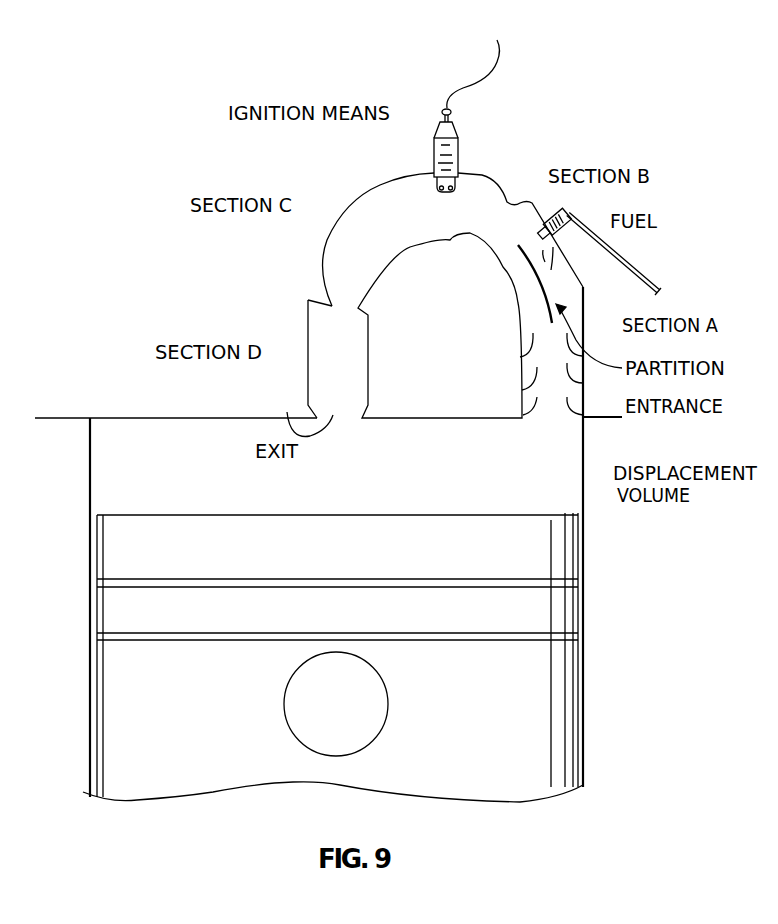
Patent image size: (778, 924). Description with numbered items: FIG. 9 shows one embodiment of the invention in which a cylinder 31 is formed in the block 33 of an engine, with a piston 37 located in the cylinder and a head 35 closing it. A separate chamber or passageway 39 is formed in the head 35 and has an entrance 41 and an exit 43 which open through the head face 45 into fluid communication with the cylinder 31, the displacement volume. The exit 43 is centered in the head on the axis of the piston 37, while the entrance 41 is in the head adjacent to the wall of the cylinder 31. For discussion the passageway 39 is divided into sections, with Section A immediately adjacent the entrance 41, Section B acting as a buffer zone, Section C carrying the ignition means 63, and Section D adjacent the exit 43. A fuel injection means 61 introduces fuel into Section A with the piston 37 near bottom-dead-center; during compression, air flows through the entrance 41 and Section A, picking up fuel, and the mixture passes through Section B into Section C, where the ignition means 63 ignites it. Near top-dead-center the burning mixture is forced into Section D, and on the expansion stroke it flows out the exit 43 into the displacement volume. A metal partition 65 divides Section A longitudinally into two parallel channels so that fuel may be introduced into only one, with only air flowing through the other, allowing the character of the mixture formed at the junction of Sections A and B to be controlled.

The cylinder 31 is at (90, 488).
The block 33 is at (642, 613).
The head 35 is at (112, 285).
The piston 37 is at (557, 722).
The passageway 39 is at (360, 203).
The entrance 41 is at (548, 417).
The exit 43 is at (298, 416).
The head face 45 is at (127, 420).
The fuel injection means 61 is at (575, 208).
The ignition means 63 is at (458, 153).
The partition 65 is at (545, 287).